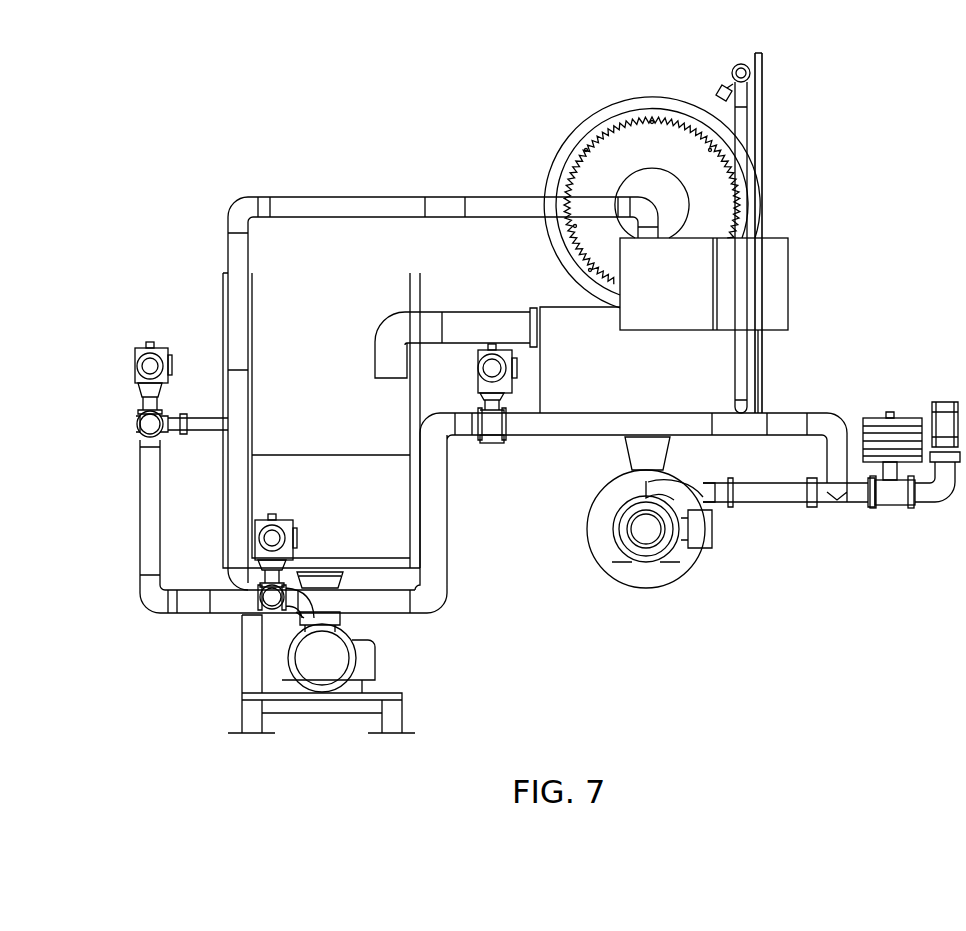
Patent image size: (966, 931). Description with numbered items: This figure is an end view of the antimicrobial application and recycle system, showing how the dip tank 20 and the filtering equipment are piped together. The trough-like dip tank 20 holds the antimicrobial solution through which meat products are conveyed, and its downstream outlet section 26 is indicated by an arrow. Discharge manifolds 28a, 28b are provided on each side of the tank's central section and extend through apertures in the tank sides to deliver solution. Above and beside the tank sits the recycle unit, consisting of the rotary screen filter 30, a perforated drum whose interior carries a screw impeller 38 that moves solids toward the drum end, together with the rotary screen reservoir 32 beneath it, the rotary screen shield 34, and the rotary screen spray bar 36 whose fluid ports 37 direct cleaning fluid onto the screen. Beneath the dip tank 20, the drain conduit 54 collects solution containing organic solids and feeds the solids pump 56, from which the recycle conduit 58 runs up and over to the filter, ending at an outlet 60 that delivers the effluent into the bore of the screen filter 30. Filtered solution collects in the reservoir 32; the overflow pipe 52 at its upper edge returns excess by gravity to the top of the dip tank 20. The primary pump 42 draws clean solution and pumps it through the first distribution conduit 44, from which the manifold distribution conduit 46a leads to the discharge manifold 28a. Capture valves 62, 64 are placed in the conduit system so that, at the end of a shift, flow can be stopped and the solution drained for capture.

The dip tank 20 is at (353, 510).
The outlet section 26 is at (402, 521).
The discharge manifold 28a is at (198, 416).
The discharge manifold 28b is at (492, 443).
The rotary screen filter 30 is at (592, 117).
The rotary screen reservoir 32 is at (652, 380).
The rotary screen shield 34 is at (763, 151).
The rotary screen spray bar 36 is at (741, 58).
The fluid port 37 is at (722, 95).
The screw impeller 38 is at (630, 135).
The primary pump 42 is at (648, 540).
The first distribution conduit 44 is at (789, 425).
The manifold distribution conduit 46a is at (138, 505).
The overflow pipe 52 is at (473, 323).
The drain conduit 54 is at (345, 580).
The solids pump 56 is at (372, 690).
The recycle conduit 58 is at (373, 207).
The outlet 60 is at (656, 222).
The capture valve 62 is at (137, 368).
The capture valve 64 is at (480, 368).